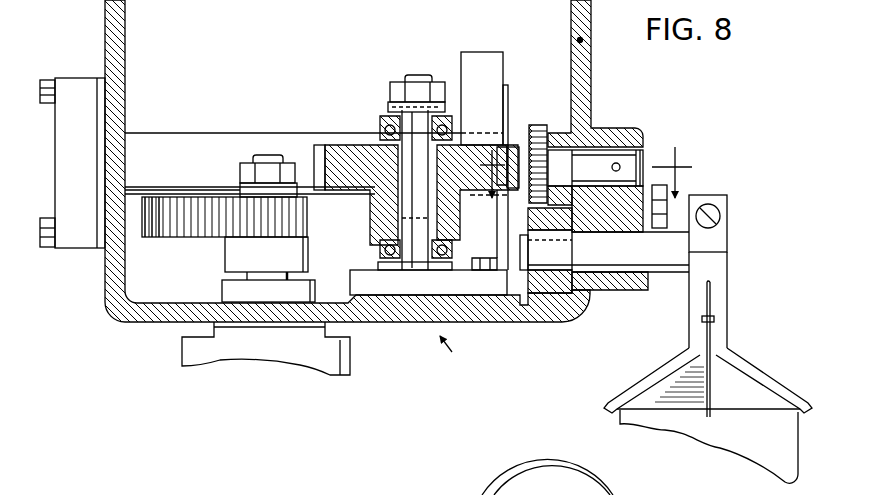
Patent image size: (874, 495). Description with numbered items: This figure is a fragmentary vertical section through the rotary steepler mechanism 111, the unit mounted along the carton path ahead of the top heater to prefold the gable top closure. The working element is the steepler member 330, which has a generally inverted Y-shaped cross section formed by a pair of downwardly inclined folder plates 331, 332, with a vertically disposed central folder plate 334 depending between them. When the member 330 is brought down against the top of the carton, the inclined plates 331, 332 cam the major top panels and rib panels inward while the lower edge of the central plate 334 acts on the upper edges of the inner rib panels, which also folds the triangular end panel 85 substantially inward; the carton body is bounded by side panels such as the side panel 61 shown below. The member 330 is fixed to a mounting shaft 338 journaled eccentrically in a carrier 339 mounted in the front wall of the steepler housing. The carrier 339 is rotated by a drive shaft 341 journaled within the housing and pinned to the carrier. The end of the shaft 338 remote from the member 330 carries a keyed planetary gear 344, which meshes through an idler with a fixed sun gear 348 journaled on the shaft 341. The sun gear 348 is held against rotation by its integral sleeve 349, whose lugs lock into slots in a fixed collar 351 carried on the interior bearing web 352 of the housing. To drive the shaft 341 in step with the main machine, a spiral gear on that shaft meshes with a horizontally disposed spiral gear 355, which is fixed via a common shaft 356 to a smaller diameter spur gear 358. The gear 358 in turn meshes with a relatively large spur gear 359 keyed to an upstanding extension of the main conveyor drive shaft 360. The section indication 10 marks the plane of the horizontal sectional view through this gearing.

The carrier 339 is at (590, 92).
The interior bearing web 352 is at (470, 55).
The fixed collar 351 is at (508, 92).
The spiral gear 355 is at (355, 145).
The spur gear 358 is at (393, 190).
The common shaft 356 is at (415, 78).
The spur gear 359 is at (197, 228).
The main conveyor drive shaft 360 is at (262, 160).
The sun gear 348 is at (560, 125).
The sleeve 349 is at (505, 136).
The planetary gear 344 is at (557, 295).
The drive shaft 341 is at (625, 165).
The section line 10 is at (583, 184).
The mounting shaft 338 is at (665, 272).
The steepler member 330 is at (733, 333).
The folder plate 334 is at (712, 412).
The folder plate 332 is at (655, 376).
The folder plate 331 is at (758, 378).
The triangular end panel 85 is at (750, 395).
The side panel 61 is at (775, 460).
The steepler mechanism 111 is at (460, 352).